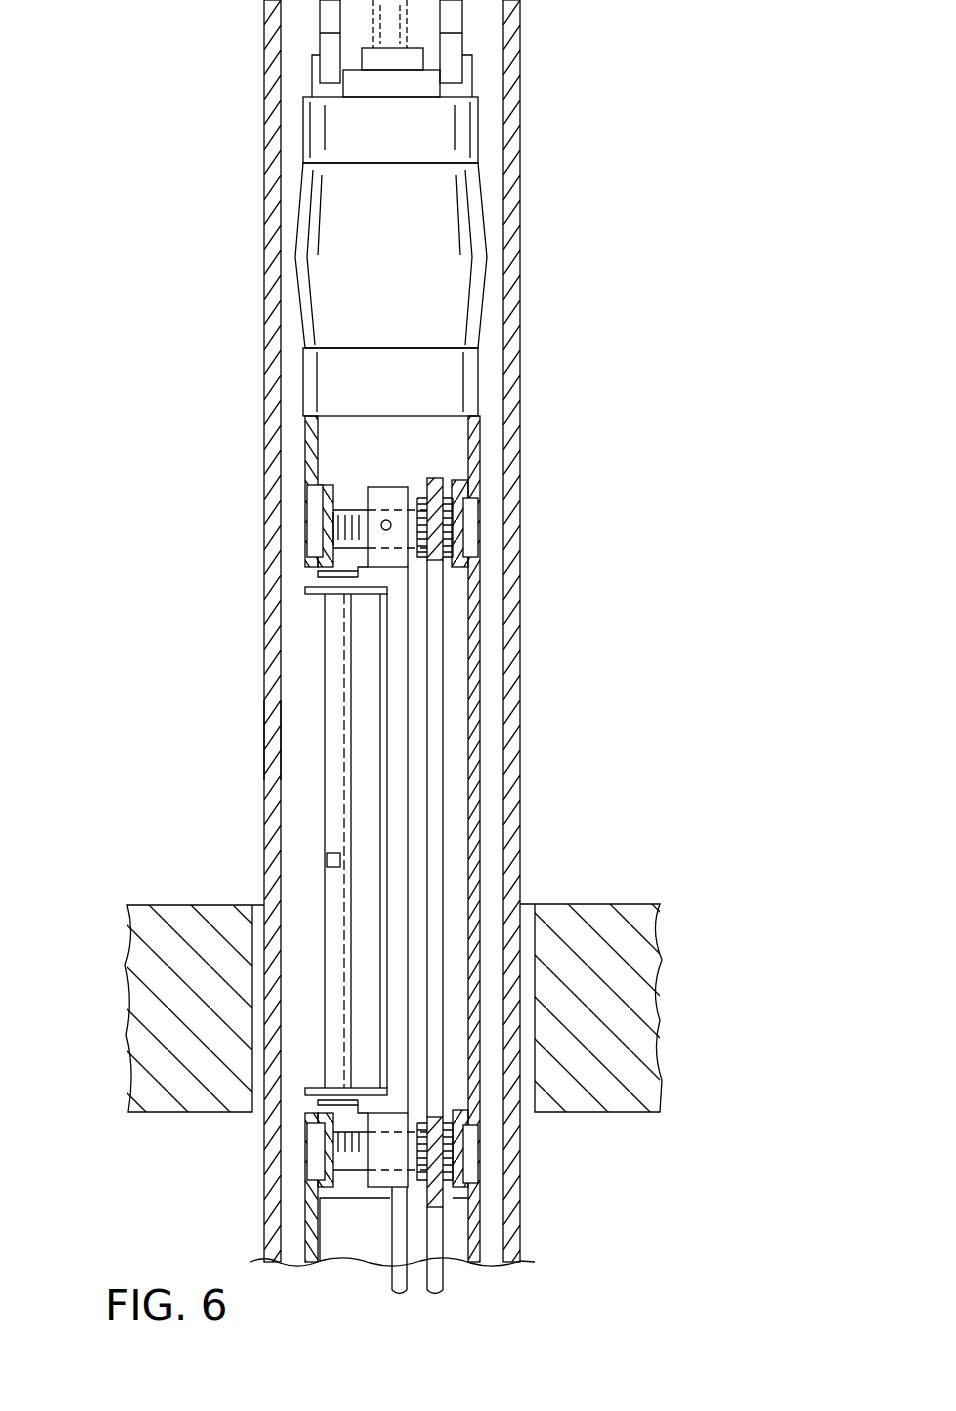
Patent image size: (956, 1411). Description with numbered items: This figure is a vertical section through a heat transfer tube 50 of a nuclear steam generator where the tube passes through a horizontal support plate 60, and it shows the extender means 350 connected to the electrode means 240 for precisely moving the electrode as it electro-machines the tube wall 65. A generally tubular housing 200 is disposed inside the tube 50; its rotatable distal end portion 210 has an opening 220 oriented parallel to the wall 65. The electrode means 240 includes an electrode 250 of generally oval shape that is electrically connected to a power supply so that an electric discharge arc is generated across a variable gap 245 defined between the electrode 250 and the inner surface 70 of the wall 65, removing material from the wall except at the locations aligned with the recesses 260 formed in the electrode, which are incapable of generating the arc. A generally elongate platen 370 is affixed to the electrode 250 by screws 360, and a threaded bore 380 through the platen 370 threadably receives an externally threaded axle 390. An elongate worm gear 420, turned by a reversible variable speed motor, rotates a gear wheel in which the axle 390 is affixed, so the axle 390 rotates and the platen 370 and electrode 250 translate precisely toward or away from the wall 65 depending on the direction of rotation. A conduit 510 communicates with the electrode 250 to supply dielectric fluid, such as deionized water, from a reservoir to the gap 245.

The heat transfer tube 50 is at (502, 55).
The horizontal support plate 60 is at (607, 908).
The tube wall 65 is at (280, 760).
The inner surface 70 is at (278, 50).
The housing 200 is at (480, 585).
The distal end portion 210 is at (480, 457).
The opening 220 is at (356, 572).
The electrode means 240 is at (471, 200).
The variable gap 245 is at (313, 692).
The electrode 250 is at (337, 805).
The recess 260 is at (327, 862).
The extender means 350 is at (469, 646).
The screw 360 is at (316, 530).
The platen 370 is at (380, 487).
The threaded bore 380 is at (393, 520).
The threaded axle 390 is at (357, 510).
The worm gear 420 is at (437, 717).
The conduit 510 is at (397, 1235).